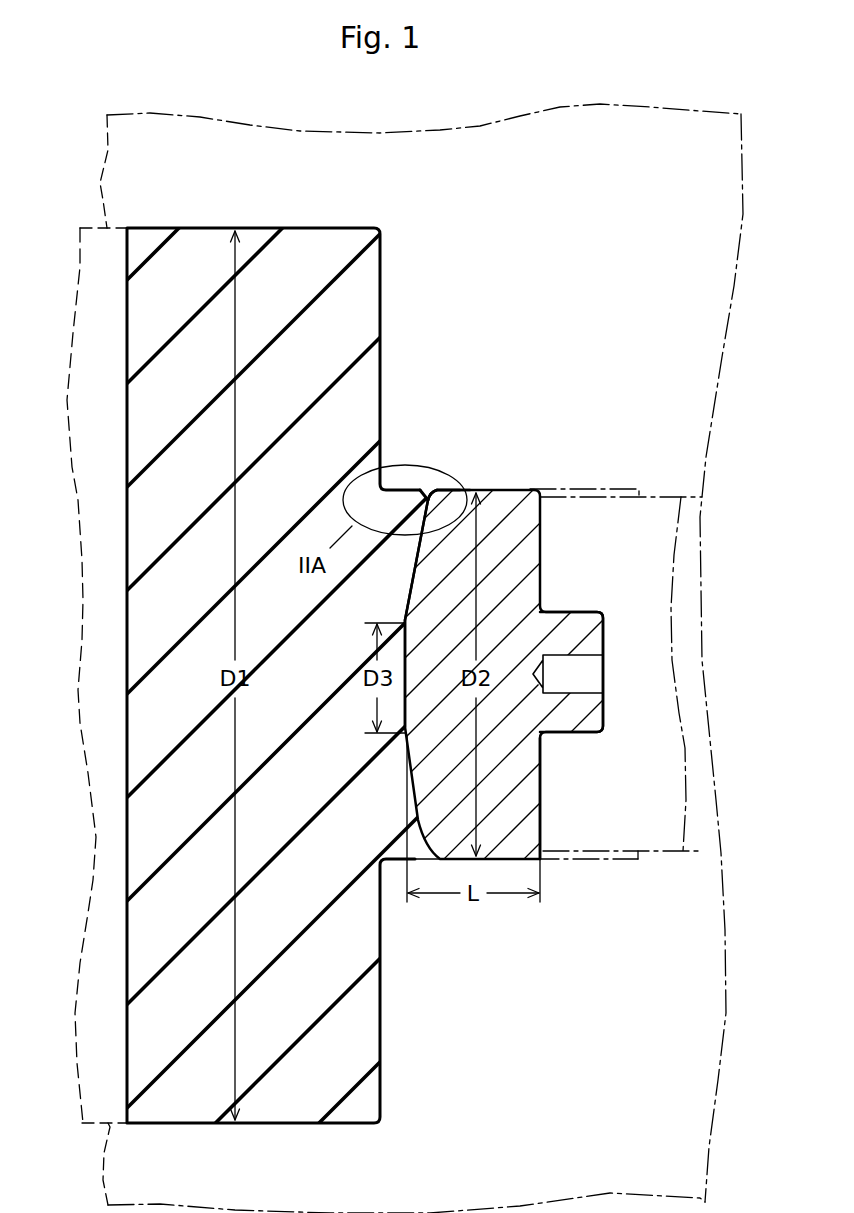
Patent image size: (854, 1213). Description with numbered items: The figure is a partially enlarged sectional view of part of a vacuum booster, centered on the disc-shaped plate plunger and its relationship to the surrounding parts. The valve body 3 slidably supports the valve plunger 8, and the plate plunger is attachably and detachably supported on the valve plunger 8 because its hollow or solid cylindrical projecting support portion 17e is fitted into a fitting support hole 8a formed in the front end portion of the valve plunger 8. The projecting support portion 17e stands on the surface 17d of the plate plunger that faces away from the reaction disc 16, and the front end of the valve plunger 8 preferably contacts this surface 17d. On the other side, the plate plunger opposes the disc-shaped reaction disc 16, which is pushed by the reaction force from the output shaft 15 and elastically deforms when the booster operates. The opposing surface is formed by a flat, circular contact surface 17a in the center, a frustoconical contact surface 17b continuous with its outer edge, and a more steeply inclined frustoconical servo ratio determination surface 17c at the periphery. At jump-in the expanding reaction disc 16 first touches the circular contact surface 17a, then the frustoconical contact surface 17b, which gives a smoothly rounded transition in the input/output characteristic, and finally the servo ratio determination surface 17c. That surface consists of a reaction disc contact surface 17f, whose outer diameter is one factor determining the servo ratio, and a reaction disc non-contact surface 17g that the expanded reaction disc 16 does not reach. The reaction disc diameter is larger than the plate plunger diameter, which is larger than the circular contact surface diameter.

The valve body 3 is at (528, 325).
The valve plunger 8 is at (658, 730).
The fitting support hole 8a is at (572, 730).
The output shaft 15 is at (100, 717).
The reaction disc 16 is at (345, 1072).
The circular contact surface 17a is at (403, 701).
The frustoconical contact surface 17b is at (414, 561).
The servo ratio determination surface 17c is at (415, 431).
The surface of the plate plunger 17d is at (544, 778).
The projecting support portion 17e is at (574, 622).
The reaction disc contact surface 17f is at (427, 494).
The reaction disc non-contact surface 17g is at (437, 492).